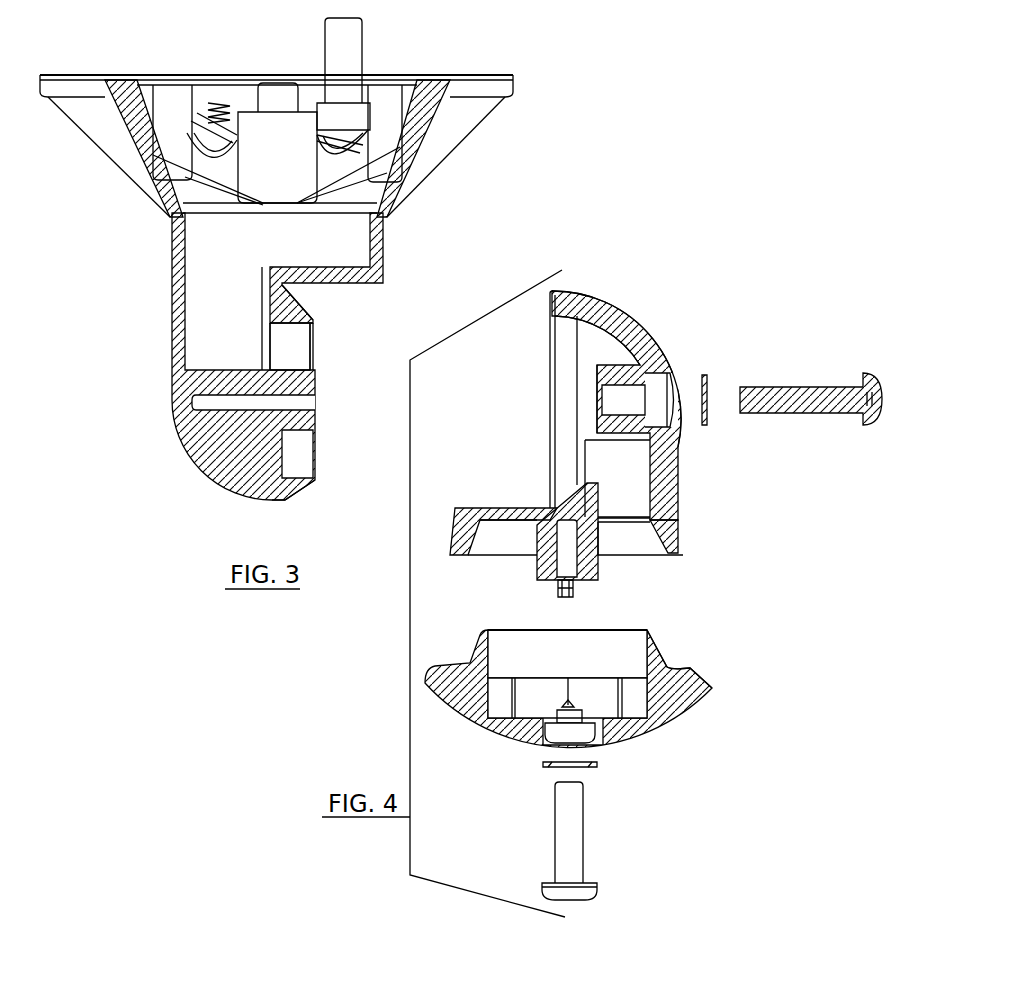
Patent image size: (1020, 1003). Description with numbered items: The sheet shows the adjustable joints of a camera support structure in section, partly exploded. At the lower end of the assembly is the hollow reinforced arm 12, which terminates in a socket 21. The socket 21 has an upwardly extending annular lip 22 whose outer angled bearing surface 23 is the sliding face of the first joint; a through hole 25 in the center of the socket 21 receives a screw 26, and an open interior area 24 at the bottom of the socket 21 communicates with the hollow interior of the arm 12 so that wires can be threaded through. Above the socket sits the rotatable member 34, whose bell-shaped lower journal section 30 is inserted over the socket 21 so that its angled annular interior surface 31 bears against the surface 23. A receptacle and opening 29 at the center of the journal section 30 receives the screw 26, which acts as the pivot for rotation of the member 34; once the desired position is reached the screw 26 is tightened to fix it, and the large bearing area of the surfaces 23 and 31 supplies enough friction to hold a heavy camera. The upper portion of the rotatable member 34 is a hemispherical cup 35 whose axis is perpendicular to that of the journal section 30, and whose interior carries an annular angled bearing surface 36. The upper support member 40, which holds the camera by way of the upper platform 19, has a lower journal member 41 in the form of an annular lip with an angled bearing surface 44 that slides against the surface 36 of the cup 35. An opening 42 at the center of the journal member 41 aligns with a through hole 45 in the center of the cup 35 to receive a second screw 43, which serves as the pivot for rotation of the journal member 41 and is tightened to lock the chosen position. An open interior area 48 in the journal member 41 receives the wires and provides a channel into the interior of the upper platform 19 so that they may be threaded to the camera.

In FIG. 4, the hollow reinforced arm 12 is at (698, 695).
In FIG. 3, the upper platform 19 is at (457, 113).
In FIG. 4, the socket 21 is at (603, 643).
In FIG. 4, the annular lip 22 is at (655, 675).
In FIG. 4, the outer angled bearing surface 23 is at (653, 662).
In FIG. 4, the open interior area 24 is at (532, 695).
In FIG. 4, the through hole 25 is at (577, 740).
In FIG. 4, the screw 26 is at (577, 838).
In FIG. 4, the receptacle and opening 29 is at (568, 553).
In FIG. 4, the bell-shaped lower journal section 30 is at (455, 545).
In FIG. 4, the angled annular interior surface 31 is at (475, 547).
In FIG. 4, the rotatable member 34 is at (680, 488).
In FIG. 4, the hemispherical cup 35 is at (575, 300).
In FIG. 4, the annular angled bearing surface 36 is at (563, 317).
In FIG. 3, the upper support member 40 is at (172, 299).
In FIG. 3, the lower journal member 41 is at (312, 320).
In FIG. 3, the opening 42 is at (300, 403).
In FIG. 4, the screw 43 is at (808, 388).
In FIG. 3, the angled bearing surface 44 is at (283, 291).
In FIG. 4, the through hole 45 is at (635, 400).
In FIG. 3, the open interior area 48 is at (303, 355).